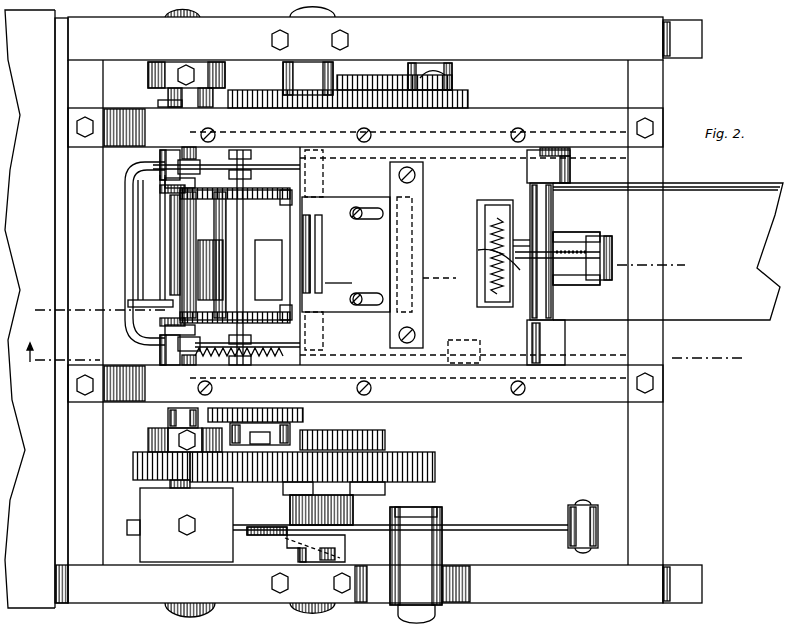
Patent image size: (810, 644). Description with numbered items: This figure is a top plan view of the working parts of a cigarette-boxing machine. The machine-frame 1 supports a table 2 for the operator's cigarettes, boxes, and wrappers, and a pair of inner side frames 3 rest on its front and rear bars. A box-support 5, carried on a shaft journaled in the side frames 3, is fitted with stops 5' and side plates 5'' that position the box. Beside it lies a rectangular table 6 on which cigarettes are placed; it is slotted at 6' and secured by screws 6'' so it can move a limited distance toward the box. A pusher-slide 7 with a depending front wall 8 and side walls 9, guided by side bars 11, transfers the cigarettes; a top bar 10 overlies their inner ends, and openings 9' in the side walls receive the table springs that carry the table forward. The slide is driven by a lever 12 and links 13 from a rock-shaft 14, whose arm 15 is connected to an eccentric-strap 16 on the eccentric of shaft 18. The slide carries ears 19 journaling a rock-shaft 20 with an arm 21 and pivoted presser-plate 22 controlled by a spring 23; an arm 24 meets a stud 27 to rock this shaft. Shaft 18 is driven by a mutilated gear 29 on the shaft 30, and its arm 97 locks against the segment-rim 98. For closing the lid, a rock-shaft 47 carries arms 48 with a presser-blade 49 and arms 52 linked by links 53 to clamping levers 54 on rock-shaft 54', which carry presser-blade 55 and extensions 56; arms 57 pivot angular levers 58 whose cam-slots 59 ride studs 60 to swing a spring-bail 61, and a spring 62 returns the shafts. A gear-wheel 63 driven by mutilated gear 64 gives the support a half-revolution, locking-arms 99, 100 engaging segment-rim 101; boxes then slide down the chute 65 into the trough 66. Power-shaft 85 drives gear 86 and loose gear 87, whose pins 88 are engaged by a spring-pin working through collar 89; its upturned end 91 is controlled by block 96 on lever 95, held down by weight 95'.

The frame 1 is at (378, 310).
The table 2 is at (30, 309).
The inner side frames 3 is at (389, 255).
The box-support 5 is at (235, 255).
The stops 5' is at (286, 255).
The side plates 5'' is at (237, 254).
The table 6 is at (346, 254).
The slots 6' is at (368, 256).
The screws 6'' is at (344, 257).
The pusher-slide 7 is at (442, 242).
The front wall 8 is at (400, 283).
The side walls 9 is at (355, 249).
The openings 9' is at (368, 321).
The top bar 10 is at (420, 180).
The side bars 11 is at (409, 254).
The lever 12 is at (580, 245).
The links 13 is at (603, 289).
The rock-shaft 14 is at (532, 312).
The arm 15 is at (570, 170).
The eccentric-strap 16 is at (570, 156).
The shaft 18 is at (437, 68).
The ears 19 is at (548, 257).
The rock-shaft 20 is at (553, 213).
The arm 21 is at (560, 272).
The presser-plate 22 is at (503, 243).
The spring 23 is at (495, 262).
The arm 24 is at (482, 347).
The stud 27 is at (474, 336).
The mutilated gear 29 is at (337, 106).
The shaft 30 is at (311, 318).
The rock-shaft 47 is at (324, 173).
The arms 48 is at (320, 226).
The presser-blade 49 is at (318, 262).
The arms 52 is at (318, 175).
The links 53 is at (322, 346).
The box clamping and closing levers 54 is at (164, 192).
The rock-shaft 54' is at (156, 319).
The presser-blade 55 is at (140, 262).
The extensions 56 is at (128, 203).
The arms 57 is at (165, 182).
The angular levers 58 is at (176, 150).
The cam-slot 59 is at (200, 166).
The studs 60 is at (195, 150).
The spring-bail 61 is at (138, 232).
The spring 62 is at (270, 358).
The gear-wheel 63 is at (224, 390).
The mutilated gear 64 is at (290, 405).
The chute 65 is at (180, 235).
The trough 66 is at (668, 251).
The power-shaft 85 is at (185, 17).
The gear 86 is at (140, 480).
The loose gear 87 is at (436, 468).
The pins 88 is at (283, 487).
The collar 89 is at (287, 540).
The upturned end 91 is at (305, 562).
The lever 95 is at (355, 526).
The weight 95' is at (186, 525).
The block 96 is at (315, 548).
The arm 97 is at (400, 80).
The segment-rim 98 is at (394, 77).
The locking-arm 99 is at (210, 420).
The locking-arm 100 is at (260, 436).
The segment-rim 101 is at (370, 420).